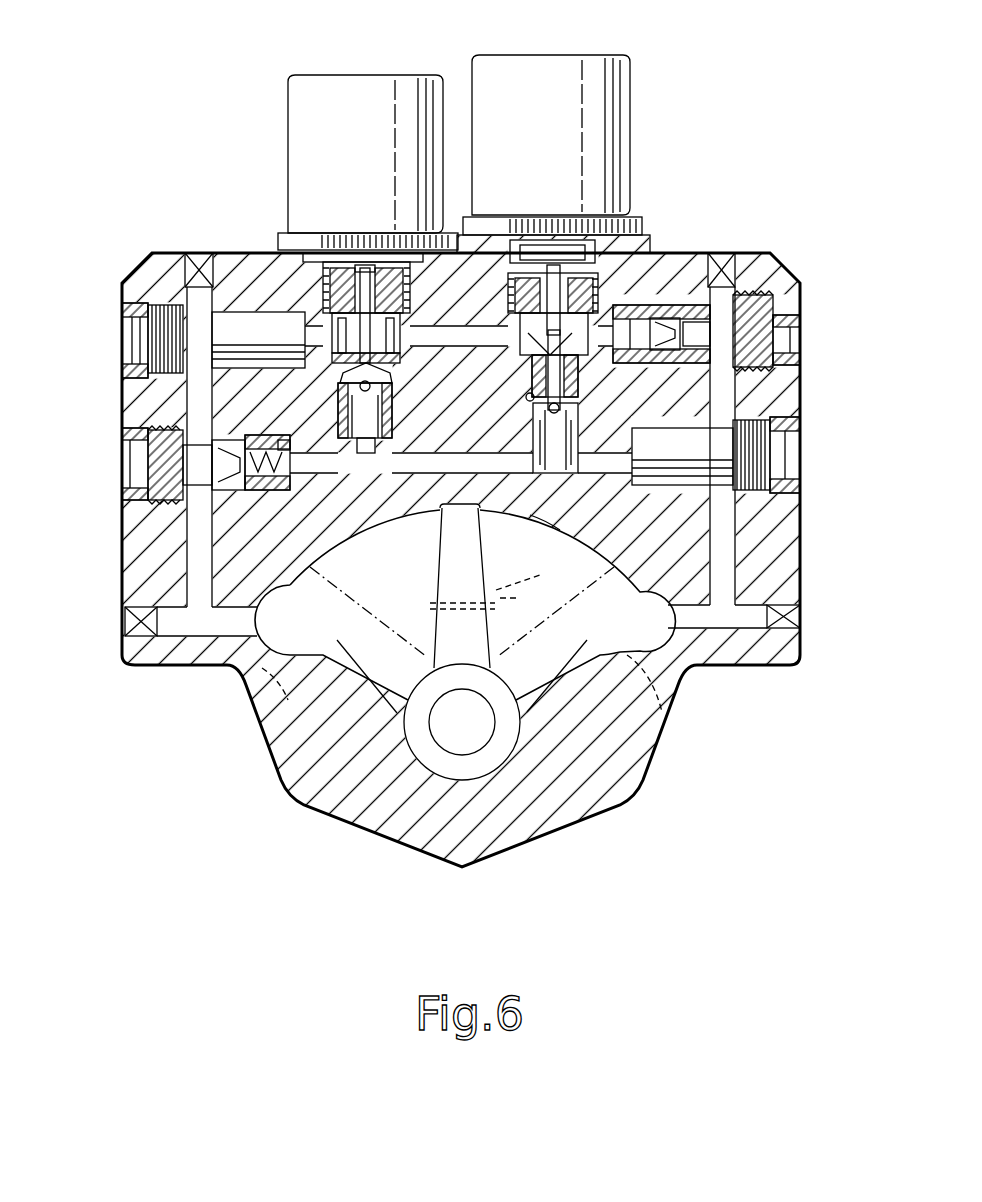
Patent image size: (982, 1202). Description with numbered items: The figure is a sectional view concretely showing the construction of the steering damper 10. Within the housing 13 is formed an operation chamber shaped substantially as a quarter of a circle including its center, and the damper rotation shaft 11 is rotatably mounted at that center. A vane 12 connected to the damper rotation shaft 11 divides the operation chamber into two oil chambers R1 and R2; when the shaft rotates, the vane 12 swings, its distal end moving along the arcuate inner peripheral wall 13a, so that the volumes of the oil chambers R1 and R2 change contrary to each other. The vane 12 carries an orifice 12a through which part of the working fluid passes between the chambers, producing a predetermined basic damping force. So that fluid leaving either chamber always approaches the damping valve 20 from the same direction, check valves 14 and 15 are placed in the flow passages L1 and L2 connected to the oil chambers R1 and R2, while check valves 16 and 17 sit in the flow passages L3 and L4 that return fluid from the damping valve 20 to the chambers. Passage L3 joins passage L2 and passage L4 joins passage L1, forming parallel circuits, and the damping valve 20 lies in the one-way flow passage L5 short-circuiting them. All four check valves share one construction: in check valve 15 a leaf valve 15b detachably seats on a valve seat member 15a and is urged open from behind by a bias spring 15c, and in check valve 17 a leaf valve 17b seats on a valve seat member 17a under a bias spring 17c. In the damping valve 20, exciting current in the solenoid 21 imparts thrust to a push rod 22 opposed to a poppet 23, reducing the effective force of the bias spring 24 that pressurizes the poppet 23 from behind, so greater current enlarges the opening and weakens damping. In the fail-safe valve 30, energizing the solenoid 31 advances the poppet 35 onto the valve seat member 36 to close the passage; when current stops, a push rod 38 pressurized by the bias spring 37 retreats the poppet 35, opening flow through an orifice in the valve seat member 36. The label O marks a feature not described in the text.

The steering damper 10 is at (262, 805).
The damper rotation shaft 11 is at (442, 740).
The vane 12 is at (438, 553).
The orifice 12a is at (496, 590).
The housing 13 is at (270, 775).
The arcuate inner peripheral wall 13a is at (548, 525).
The check valve 14 is at (115, 330).
The check valve 15 is at (810, 327).
The valve seat member 15a is at (690, 282).
The leaf valve 15b is at (672, 365).
The bias spring 15c is at (650, 312).
The check valve 16 is at (810, 457).
The check valve 17 is at (115, 466).
The valve seat member 17a is at (276, 492).
The leaf valve 17b is at (290, 446).
The bias spring 17c is at (235, 493).
The damping valve 20 is at (280, 138).
The solenoid 21 is at (288, 200).
The push rod 22 is at (323, 283).
The poppet 23 is at (334, 366).
The bias spring 24 is at (394, 432).
The fail-safe valve 30 is at (640, 133).
The solenoid 31 is at (633, 192).
The poppet 35 is at (508, 295).
The valve seat member 36 is at (532, 365).
The bias spring 37 is at (568, 476).
The push rod 38 is at (580, 390).
The flow passage L1 is at (187, 553).
The flow passage L2 is at (737, 575).
The flow passage L3 is at (735, 400).
The flow passage L4 is at (187, 400).
The flow passage L5 is at (392, 472).
The oil chamber R1 is at (422, 619).
The oil chamber R2 is at (527, 619).
The O-ring O is at (527, 396).